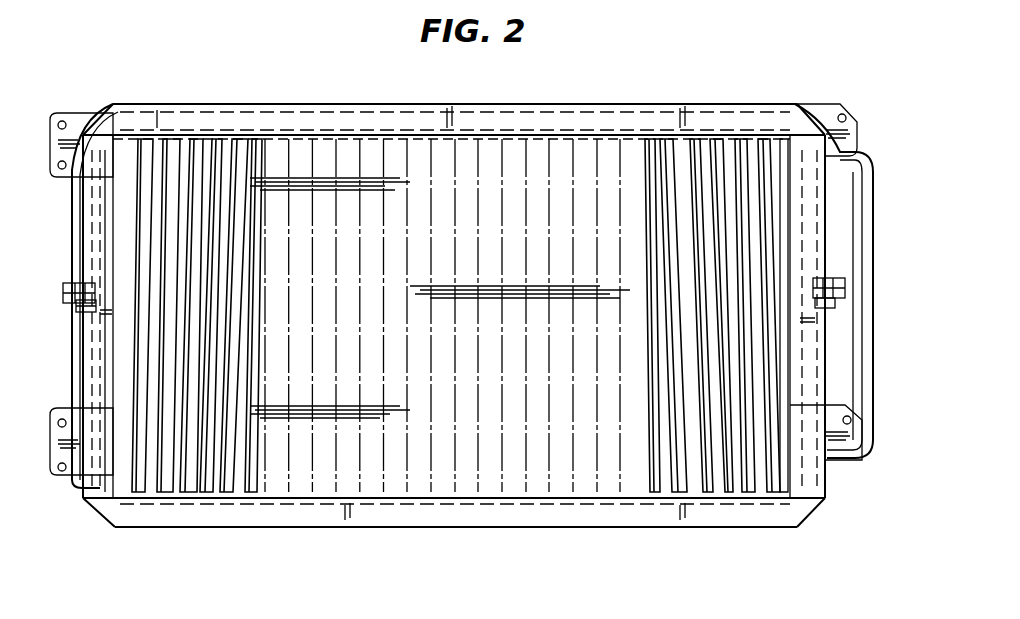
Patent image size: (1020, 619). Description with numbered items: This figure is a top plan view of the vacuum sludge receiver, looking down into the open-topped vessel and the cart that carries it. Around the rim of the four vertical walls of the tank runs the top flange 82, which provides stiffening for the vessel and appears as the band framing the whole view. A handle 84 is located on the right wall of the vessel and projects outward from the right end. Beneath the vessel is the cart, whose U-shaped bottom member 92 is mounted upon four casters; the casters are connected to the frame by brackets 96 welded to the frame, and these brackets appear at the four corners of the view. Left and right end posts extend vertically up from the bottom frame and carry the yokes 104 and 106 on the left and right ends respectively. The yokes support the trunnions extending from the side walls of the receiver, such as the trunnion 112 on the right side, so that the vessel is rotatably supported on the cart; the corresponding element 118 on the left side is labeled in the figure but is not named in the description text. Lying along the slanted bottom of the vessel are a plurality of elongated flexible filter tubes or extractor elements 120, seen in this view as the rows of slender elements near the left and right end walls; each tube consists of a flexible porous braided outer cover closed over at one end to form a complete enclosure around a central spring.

The top flange 82 is at (602, 516).
The handle 84 is at (873, 250).
The U-shaped bottom member 92 is at (72, 222).
The brackets 96 is at (70, 113).
The yoke 104 is at (78, 306).
The yoke 106 is at (832, 304).
The trunnion 112 is at (846, 286).
The left clamp block 118 is at (63, 292).
The elongated flexible filter tubes 120 is at (240, 277).